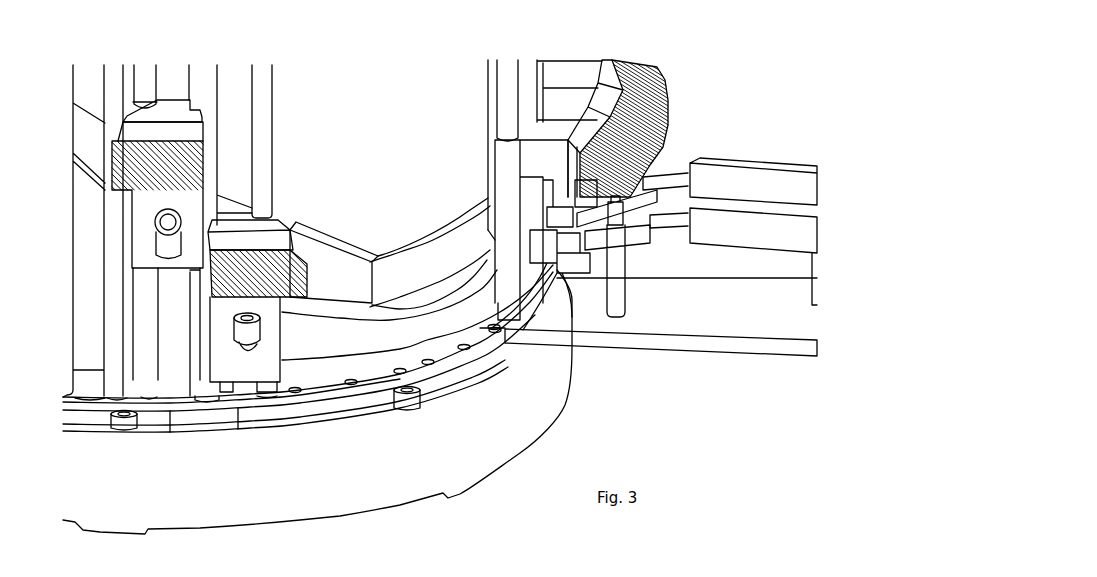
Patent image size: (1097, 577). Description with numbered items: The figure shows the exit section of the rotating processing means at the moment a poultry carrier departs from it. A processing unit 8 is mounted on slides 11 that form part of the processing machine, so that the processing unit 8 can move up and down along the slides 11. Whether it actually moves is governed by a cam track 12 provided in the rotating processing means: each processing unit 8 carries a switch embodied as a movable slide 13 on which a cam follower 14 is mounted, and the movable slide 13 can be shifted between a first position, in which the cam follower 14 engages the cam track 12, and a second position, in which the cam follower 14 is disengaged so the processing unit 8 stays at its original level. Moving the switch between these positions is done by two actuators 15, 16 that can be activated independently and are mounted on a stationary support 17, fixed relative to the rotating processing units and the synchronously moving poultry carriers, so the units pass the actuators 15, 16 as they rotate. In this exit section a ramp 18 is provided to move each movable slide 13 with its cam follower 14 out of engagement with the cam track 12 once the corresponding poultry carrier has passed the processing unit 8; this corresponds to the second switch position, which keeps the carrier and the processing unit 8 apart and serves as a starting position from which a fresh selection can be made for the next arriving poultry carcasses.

The processing unit 8 is at (184, 200).
The slide 11 is at (201, 99).
The cam track 12 is at (338, 262).
The movable slide 13 is at (558, 296).
The cam follower 14 is at (480, 234).
The actuator 15 is at (725, 236).
The actuator 16 is at (718, 174).
The stationary support 17 is at (746, 344).
The ramp 18 is at (418, 272).